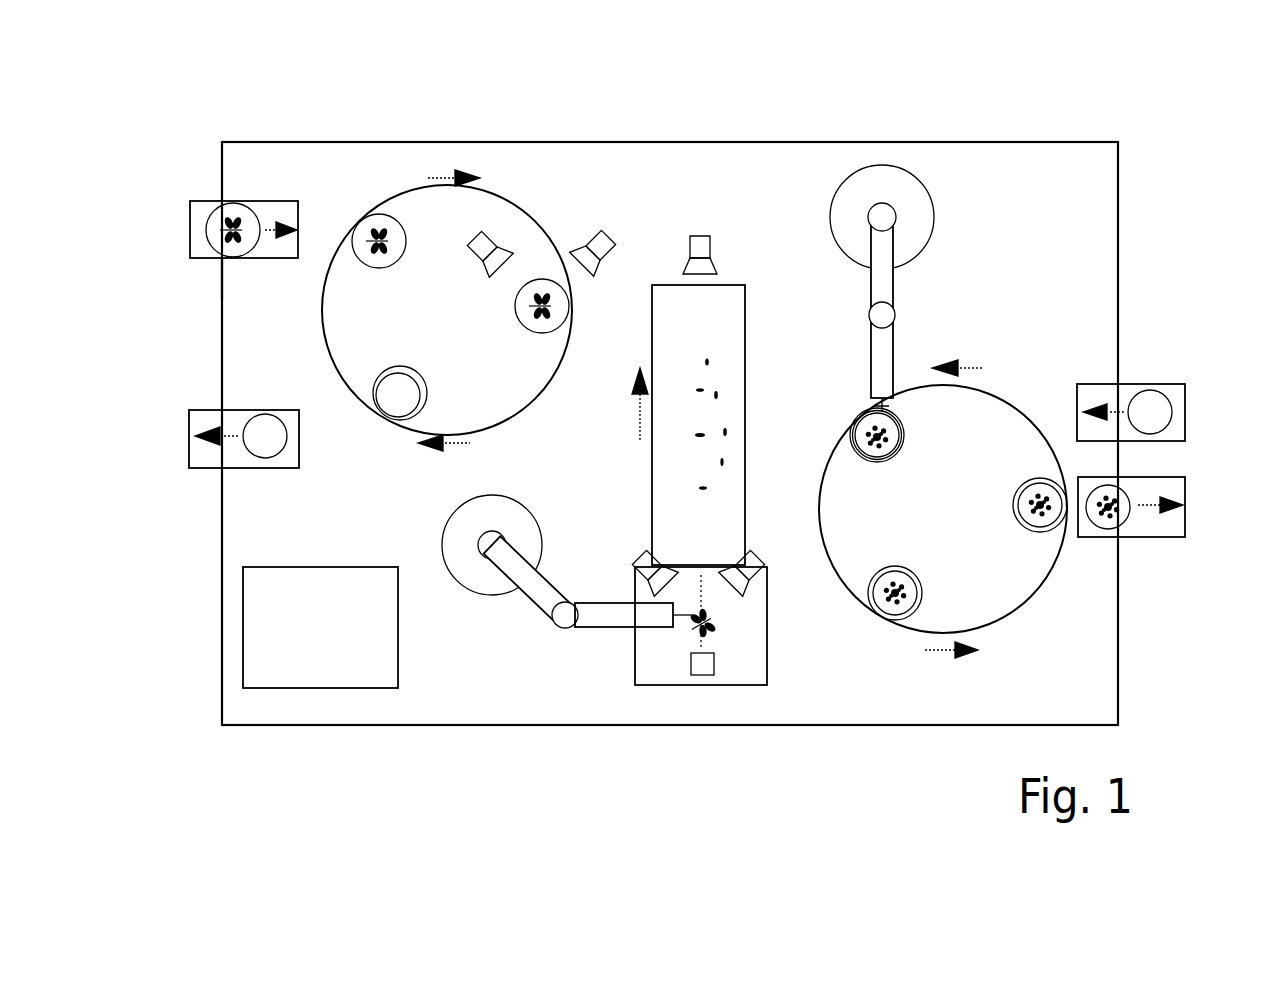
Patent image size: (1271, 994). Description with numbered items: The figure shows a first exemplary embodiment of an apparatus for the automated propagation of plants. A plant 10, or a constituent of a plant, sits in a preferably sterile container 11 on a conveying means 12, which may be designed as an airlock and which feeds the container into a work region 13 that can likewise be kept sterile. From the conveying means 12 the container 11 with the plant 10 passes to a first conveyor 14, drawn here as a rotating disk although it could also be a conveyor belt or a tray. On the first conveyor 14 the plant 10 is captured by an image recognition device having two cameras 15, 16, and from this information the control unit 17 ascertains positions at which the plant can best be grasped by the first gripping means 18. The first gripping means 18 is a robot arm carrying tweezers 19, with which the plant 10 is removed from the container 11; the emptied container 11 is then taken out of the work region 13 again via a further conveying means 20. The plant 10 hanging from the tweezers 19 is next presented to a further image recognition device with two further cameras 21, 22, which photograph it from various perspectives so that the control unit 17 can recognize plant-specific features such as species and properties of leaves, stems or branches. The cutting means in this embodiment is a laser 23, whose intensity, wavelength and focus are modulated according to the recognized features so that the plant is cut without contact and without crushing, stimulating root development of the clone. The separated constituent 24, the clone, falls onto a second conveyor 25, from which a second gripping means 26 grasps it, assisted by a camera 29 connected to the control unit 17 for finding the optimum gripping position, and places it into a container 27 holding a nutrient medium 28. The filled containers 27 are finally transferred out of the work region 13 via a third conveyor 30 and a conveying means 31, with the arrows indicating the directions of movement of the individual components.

The plant 10 is at (240, 212).
The container 11 is at (218, 259).
The conveying means 12 is at (194, 201).
The work region 13 is at (1083, 178).
The first conveyor 14 is at (486, 243).
The camera 15 is at (528, 213).
The camera 16 is at (608, 237).
The control unit 17 is at (330, 689).
The first gripping means 18 is at (587, 629).
The tweezers 19 is at (690, 614).
The further conveying means 20 is at (203, 468).
The further camera 21 is at (643, 560).
The further camera 22 is at (752, 574).
The laser 23 is at (714, 666).
The separated constituent 24 is at (719, 393).
The second conveyor 25 is at (743, 286).
The second gripping means 26 is at (894, 283).
The container 27 is at (898, 433).
The nutrient medium 28 is at (897, 416).
The camera 29 is at (703, 238).
The third conveyor 30 is at (1043, 593).
The conveying means 31 is at (1172, 537).